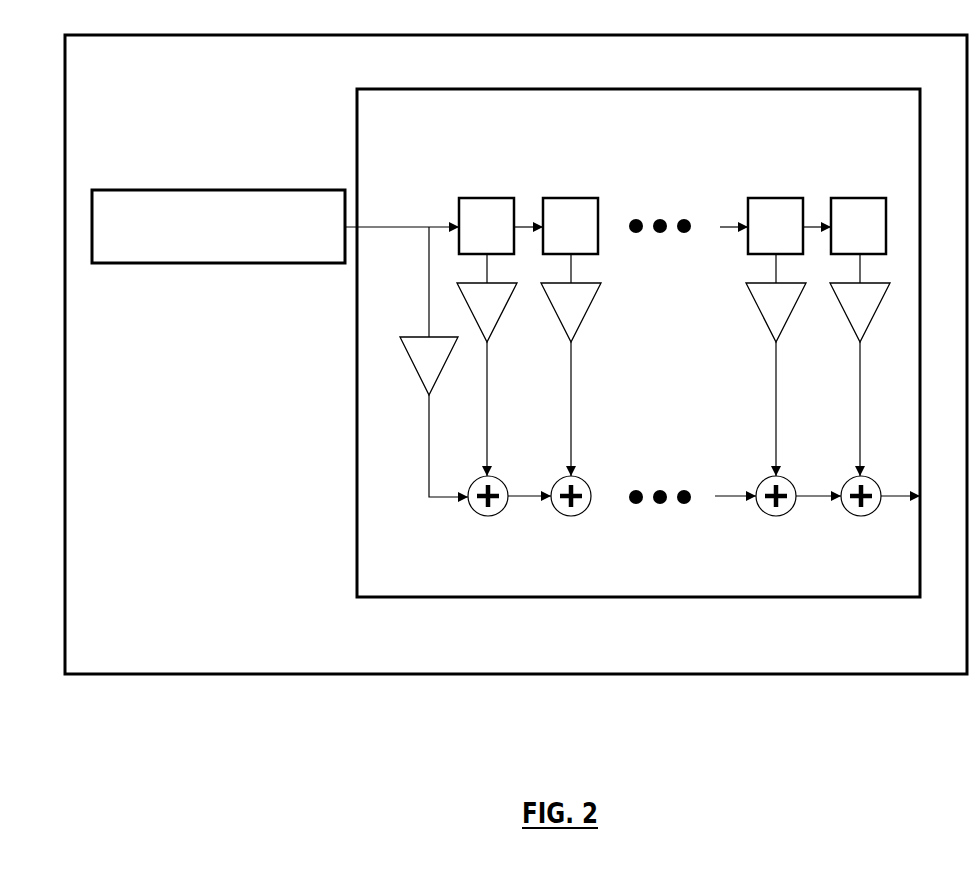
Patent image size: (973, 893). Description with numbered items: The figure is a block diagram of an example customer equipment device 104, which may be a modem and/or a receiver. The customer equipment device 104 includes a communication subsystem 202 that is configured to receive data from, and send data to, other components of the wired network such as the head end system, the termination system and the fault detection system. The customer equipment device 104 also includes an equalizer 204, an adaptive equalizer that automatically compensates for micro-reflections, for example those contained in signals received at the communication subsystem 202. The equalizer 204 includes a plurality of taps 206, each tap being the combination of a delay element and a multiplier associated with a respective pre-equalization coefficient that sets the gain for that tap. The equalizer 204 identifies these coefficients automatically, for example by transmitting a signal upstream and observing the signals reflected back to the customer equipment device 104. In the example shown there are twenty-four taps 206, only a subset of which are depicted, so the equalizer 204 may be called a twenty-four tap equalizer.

The customer equipment device 104 is at (516, 354).
The communication subsystem 202 is at (218, 226).
The equalizer 204 is at (632, 343).
The taps 206 is at (628, 365).